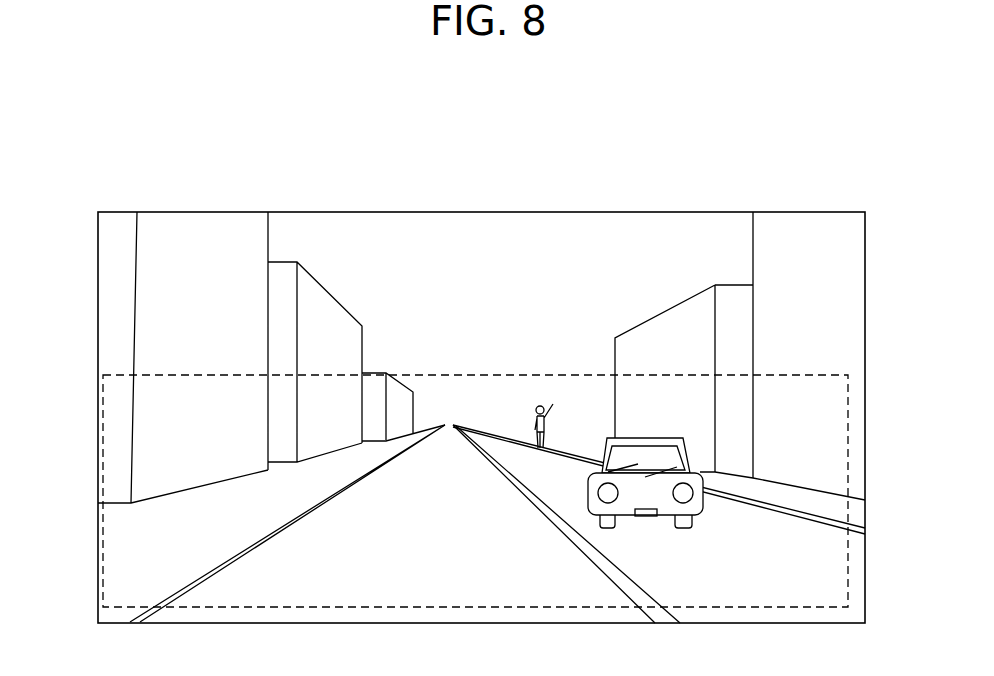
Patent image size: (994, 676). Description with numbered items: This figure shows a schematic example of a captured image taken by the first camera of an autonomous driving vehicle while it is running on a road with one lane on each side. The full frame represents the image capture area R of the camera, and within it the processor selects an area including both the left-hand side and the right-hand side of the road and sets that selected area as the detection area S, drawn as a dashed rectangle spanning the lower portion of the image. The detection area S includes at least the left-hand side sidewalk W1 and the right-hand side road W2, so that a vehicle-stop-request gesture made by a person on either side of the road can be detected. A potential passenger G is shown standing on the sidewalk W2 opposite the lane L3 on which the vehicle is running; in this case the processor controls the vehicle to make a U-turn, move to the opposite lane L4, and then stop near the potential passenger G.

The image capture area R is at (293, 201).
The detection area S is at (98, 513).
The potential passenger G is at (546, 400).
The left-hand side sidewalk W1 is at (113, 570).
The right-hand side road W2 is at (858, 507).
The lane L3 is at (335, 595).
The opposite lane L4 is at (768, 592).